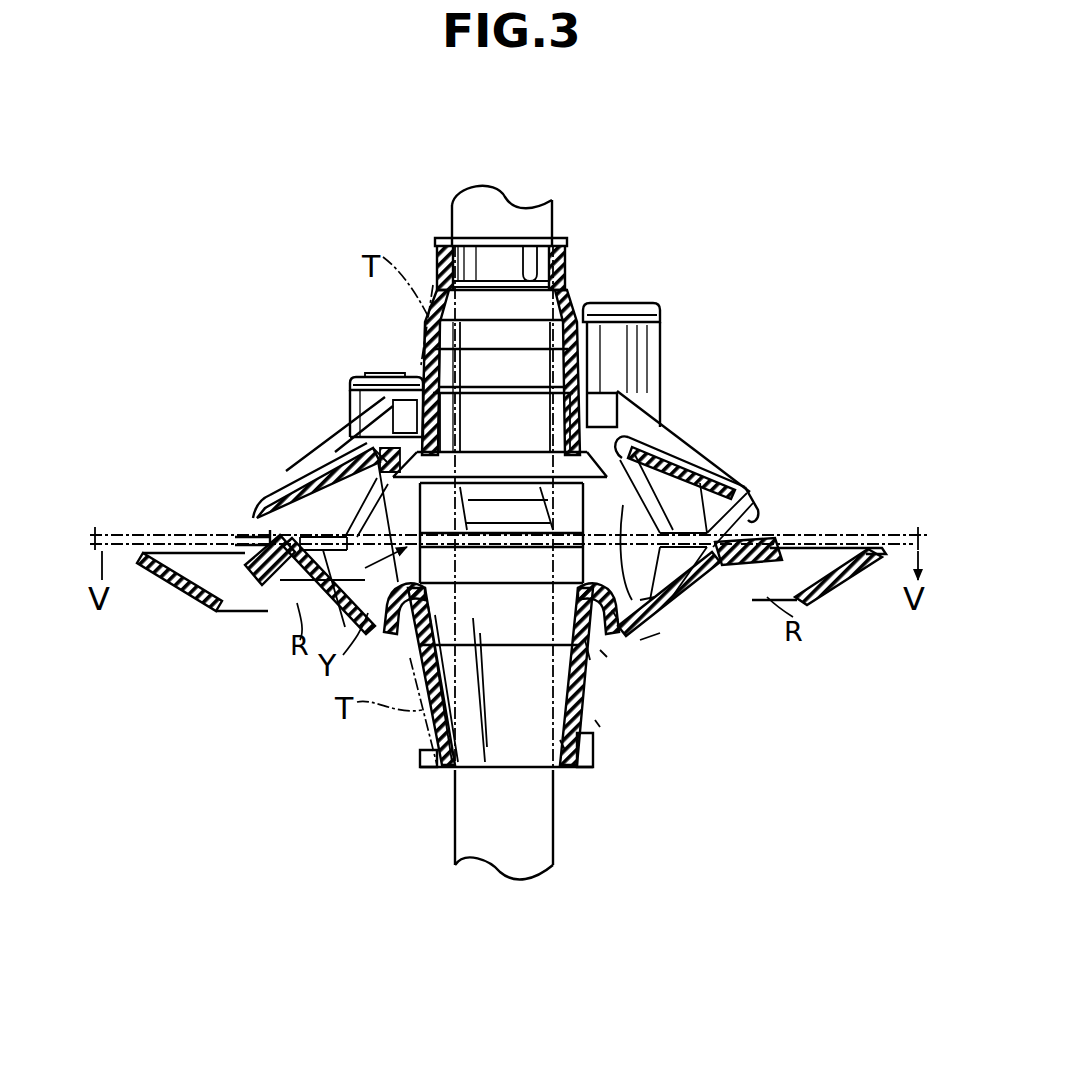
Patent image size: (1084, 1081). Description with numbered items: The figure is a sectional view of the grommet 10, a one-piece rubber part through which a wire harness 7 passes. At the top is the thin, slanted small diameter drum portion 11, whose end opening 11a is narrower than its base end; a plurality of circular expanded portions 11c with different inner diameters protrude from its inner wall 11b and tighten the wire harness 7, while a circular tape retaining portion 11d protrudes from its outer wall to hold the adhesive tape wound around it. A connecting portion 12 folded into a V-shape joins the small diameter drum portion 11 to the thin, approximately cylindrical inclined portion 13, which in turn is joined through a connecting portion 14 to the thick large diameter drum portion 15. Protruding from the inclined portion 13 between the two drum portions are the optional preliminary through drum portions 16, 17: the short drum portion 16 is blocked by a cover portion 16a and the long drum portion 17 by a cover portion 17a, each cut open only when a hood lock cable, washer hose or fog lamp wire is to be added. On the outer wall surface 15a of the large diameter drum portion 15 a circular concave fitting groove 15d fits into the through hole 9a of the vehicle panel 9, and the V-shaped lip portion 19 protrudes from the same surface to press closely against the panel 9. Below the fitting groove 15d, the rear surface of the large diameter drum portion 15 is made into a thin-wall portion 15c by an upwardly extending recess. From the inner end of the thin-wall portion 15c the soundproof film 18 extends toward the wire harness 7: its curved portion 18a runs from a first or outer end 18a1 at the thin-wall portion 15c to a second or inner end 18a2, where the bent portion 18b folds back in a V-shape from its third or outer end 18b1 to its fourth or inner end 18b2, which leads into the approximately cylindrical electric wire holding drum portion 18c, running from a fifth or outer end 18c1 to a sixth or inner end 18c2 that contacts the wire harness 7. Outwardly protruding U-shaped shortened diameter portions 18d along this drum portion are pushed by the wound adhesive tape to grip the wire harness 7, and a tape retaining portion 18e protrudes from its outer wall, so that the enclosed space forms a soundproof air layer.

The wire harness 7 is at (453, 812).
The panel 9 is at (912, 528).
The through hole 9a is at (660, 633).
The grommet 10 is at (812, 341).
The small diameter drum portion 11 is at (532, 290).
The end opening 11a is at (505, 245).
The inner wall 11b is at (477, 263).
The expanded portions 11c is at (513, 318).
The tape retaining portion 11d is at (442, 293).
The connecting portion 12 is at (648, 430).
The inclined portion 13 is at (302, 458).
The connecting portion 14 is at (262, 494).
The large diameter drum portion 15 is at (515, 559).
The outer wall surface 15a is at (753, 517).
The thin-wall portion 15c is at (272, 611).
The fitting groove 15d is at (267, 540).
The preliminary through drum portion 16 is at (354, 377).
The cover portion 16a is at (360, 374).
The preliminary through drum portion 17 is at (676, 343).
The cover portion 17a is at (640, 302).
The soundproof film 18 is at (548, 677).
The curved portion 18a is at (640, 655).
The first or outer end 18a1 is at (655, 597).
The second or inner end 18a2 is at (660, 645).
The bent portion 18b is at (615, 587).
The third or outer end 18b1 is at (663, 690).
The fourth or inner end 18b2 is at (607, 657).
The electric wire holding drum portion 18c is at (580, 772).
The fifth or outer end 18c1 is at (600, 727).
The sixth or inner end 18c2 is at (565, 750).
The shortened diameter portions 18d is at (490, 747).
The tape retaining portion 18e is at (420, 760).
The lip portion 19 is at (832, 587).